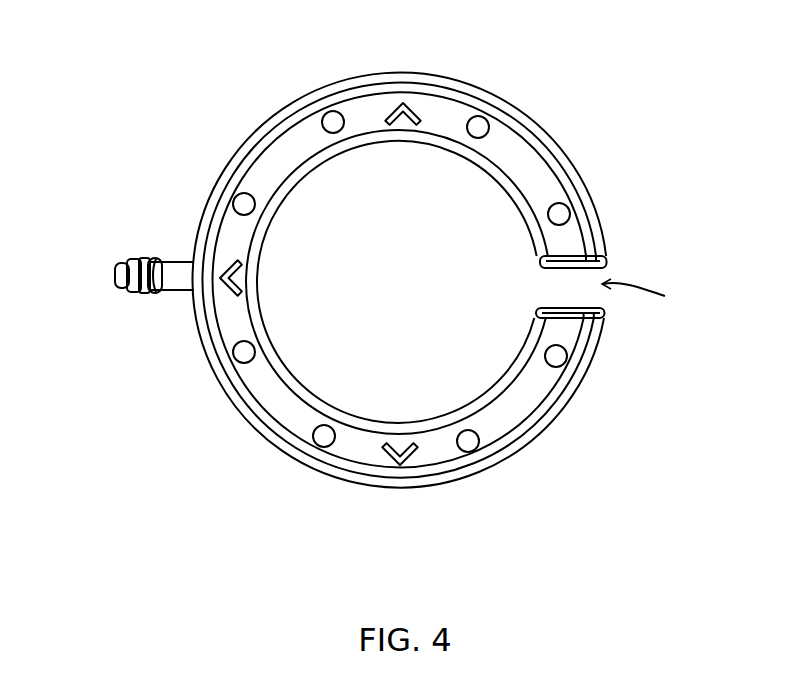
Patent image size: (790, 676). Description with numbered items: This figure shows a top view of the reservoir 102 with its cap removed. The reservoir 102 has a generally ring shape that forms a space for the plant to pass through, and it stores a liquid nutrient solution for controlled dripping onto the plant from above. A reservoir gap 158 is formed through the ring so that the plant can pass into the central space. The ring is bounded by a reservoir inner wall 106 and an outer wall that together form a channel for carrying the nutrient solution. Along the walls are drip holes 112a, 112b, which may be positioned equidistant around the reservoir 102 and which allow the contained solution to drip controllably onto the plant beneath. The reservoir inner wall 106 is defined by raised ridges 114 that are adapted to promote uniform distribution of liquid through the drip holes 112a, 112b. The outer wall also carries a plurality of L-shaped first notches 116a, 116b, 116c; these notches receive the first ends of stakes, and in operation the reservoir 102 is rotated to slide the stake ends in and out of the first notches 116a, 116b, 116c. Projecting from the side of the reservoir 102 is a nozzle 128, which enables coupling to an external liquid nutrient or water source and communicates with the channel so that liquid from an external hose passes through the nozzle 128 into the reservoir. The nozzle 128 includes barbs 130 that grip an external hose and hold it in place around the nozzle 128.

The reservoir 102 is at (600, 338).
The reservoir inner wall 106 is at (303, 133).
The drip hole 112a is at (236, 198).
The drip hole 112b is at (463, 452).
The raised ridges 114 is at (262, 398).
The L-shaped first notch 116a is at (397, 103).
The L-shaped first notch 116b is at (228, 300).
The L-shaped first notch 116c is at (402, 465).
The nozzle 128 is at (112, 283).
The barbs 130 is at (150, 258).
The reservoir gap 158 is at (653, 293).